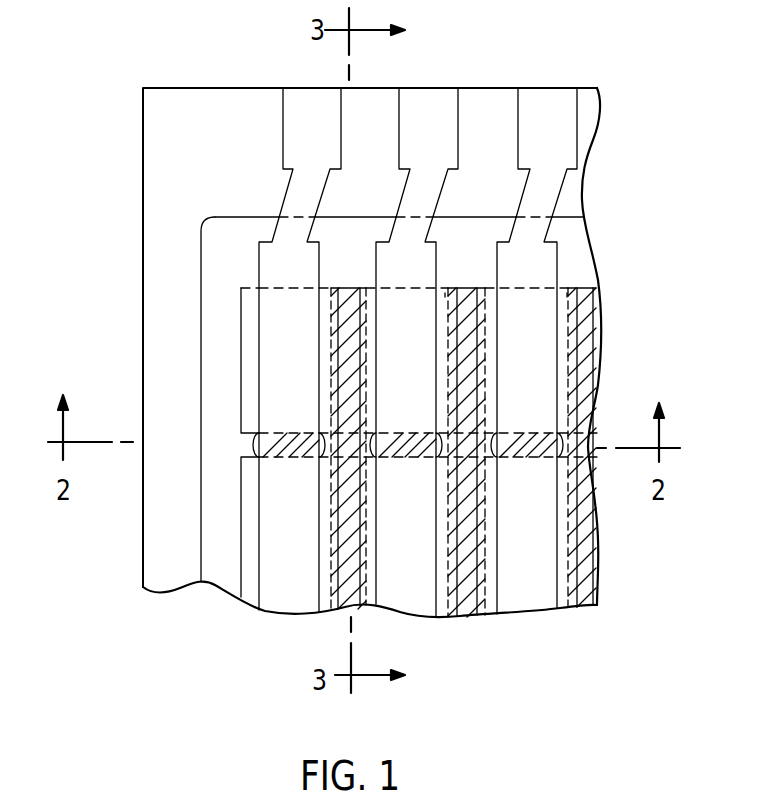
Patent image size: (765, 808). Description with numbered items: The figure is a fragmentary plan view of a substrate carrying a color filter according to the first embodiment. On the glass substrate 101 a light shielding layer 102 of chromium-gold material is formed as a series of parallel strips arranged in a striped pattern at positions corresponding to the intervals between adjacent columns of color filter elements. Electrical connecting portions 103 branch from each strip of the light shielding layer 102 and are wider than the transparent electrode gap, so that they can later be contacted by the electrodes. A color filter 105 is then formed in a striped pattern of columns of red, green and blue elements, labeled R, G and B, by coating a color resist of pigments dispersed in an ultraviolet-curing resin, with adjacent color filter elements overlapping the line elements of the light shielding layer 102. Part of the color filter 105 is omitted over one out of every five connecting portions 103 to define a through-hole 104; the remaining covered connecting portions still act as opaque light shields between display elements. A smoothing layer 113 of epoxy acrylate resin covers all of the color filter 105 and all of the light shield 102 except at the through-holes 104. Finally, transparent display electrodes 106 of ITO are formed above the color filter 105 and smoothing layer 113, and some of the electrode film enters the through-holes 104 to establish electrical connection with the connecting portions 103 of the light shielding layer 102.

The glass substrate 101 is at (158, 181).
The light shielding layer 102 is at (482, 568).
The electrical connecting portions 103 is at (277, 437).
The through-hole 104 is at (253, 448).
The color filter 105 is at (250, 513).
The transparent display electrodes 106 is at (273, 260).
The smoothing layer 113 is at (227, 368).
The red color filter element R is at (245, 312).
The green color filter element G is at (445, 293).
The blue color filter element B is at (567, 293).